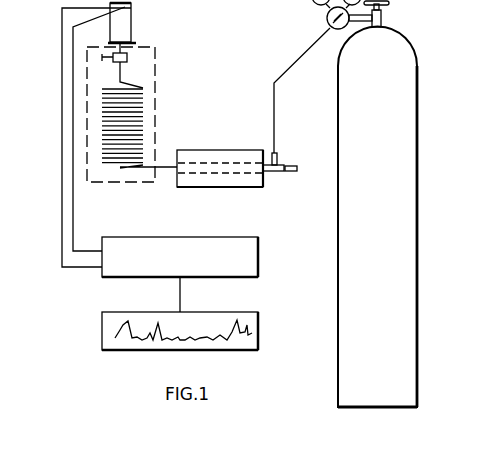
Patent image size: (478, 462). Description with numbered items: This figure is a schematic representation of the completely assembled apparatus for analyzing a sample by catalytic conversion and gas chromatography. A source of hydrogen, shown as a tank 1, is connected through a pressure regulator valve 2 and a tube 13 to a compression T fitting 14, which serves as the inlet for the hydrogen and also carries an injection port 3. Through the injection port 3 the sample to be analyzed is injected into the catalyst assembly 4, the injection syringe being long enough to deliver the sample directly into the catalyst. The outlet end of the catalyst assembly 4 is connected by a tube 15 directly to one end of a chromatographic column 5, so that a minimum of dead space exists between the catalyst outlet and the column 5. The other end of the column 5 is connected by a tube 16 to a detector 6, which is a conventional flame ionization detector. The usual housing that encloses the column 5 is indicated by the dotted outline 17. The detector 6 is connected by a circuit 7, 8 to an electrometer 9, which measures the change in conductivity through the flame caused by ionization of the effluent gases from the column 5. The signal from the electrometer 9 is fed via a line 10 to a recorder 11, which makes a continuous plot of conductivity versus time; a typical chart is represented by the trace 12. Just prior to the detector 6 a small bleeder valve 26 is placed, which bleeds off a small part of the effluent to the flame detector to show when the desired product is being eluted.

The tank 1 is at (417, 148).
The pressure regulator valve 2 is at (325, 17).
The injection port 3 is at (297, 171).
The catalyst assembly 4 is at (233, 189).
The chromatographic column 5 is at (143, 107).
The detector 6 is at (131, 32).
The circuit 7 is at (60, 212).
The circuit 8 is at (76, 214).
The electrometer 9 is at (102, 278).
The line 10 is at (182, 300).
The recorder 11 is at (100, 333).
The chart 12 is at (255, 330).
The tube 13 is at (275, 110).
The compression T fitting 14 is at (280, 163).
The tube 15 is at (161, 167).
The tube 16 is at (120, 72).
The housing 17 is at (156, 130).
The bleeder valve 26 is at (127, 57).